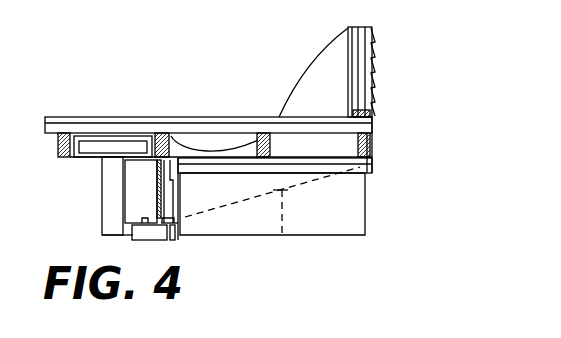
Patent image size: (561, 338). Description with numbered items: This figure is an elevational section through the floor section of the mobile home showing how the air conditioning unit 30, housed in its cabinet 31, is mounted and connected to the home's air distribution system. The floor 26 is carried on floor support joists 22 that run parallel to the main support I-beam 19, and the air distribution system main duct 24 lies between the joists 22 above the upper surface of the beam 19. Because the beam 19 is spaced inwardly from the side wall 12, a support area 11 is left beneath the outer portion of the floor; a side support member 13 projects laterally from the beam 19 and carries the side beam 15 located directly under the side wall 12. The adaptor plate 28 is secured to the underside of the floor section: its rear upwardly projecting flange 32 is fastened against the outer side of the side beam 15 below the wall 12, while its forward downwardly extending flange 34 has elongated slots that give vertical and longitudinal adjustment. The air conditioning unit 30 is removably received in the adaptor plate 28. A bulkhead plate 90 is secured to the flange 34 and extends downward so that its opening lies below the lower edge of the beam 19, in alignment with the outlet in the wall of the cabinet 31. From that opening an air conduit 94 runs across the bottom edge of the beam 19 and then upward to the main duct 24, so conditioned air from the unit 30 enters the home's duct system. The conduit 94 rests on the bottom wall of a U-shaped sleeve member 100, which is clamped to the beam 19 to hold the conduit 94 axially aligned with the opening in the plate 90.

The support area 11 is at (259, 191).
The side wall 12 is at (359, 31).
The side support member 13 is at (282, 235).
The side beam 15 is at (372, 133).
The main support I-beam 19 is at (156, 193).
The floor support joist 22 is at (183, 141).
The air distribution system main duct 24 is at (76, 160).
The floor 26 is at (67, 117).
The adaptor plate 28 is at (305, 157).
The air conditioning unit 30 is at (376, 196).
The cabinet 31 is at (347, 218).
The upwardly projecting flange 32 is at (374, 150).
The downwardly extending flange 34 is at (183, 168).
The bulkhead plate 90 is at (180, 238).
The air conduit 94 is at (102, 199).
The U-shaped sleeve member 100 is at (132, 238).